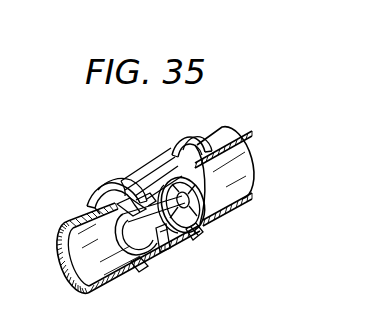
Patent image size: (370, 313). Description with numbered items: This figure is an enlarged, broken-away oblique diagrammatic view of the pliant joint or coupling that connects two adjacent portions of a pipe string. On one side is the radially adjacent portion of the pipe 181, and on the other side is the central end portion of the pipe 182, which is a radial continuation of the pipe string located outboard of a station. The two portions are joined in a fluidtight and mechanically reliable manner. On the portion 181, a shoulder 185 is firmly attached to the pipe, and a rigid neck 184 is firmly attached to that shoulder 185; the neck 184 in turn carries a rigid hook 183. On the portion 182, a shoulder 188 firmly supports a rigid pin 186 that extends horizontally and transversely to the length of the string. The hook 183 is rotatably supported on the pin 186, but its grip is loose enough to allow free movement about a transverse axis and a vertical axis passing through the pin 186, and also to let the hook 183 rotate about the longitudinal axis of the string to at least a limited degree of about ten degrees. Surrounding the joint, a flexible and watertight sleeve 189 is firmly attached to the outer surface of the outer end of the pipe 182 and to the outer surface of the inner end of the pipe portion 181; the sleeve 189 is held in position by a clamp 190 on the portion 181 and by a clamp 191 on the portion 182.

The radially adjacent portion of the pipe 181 is at (70, 236).
The central end portion of pipe 182 is at (248, 125).
The hook 183 is at (170, 183).
The neck 184 is at (150, 176).
The shoulder 185 is at (100, 195).
The pin 186 is at (197, 236).
The shoulder 188 is at (224, 221).
The sleeve 189 is at (190, 244).
The clamp 190 is at (136, 272).
The clamp 191 is at (188, 140).